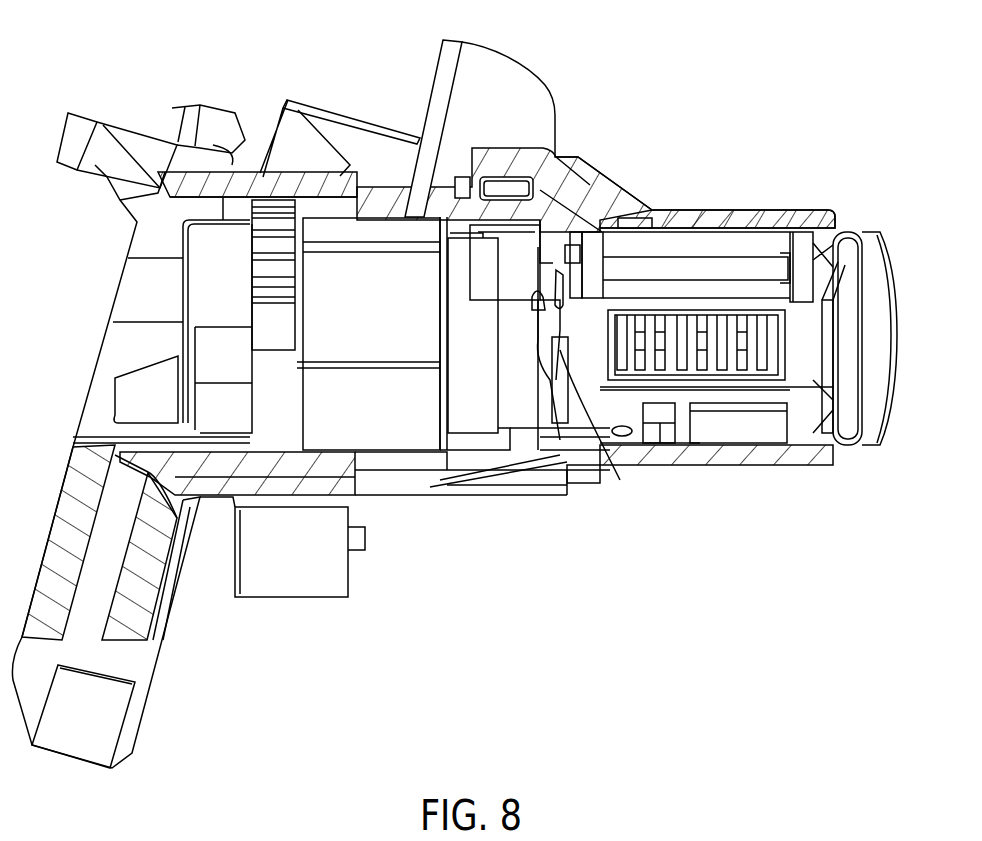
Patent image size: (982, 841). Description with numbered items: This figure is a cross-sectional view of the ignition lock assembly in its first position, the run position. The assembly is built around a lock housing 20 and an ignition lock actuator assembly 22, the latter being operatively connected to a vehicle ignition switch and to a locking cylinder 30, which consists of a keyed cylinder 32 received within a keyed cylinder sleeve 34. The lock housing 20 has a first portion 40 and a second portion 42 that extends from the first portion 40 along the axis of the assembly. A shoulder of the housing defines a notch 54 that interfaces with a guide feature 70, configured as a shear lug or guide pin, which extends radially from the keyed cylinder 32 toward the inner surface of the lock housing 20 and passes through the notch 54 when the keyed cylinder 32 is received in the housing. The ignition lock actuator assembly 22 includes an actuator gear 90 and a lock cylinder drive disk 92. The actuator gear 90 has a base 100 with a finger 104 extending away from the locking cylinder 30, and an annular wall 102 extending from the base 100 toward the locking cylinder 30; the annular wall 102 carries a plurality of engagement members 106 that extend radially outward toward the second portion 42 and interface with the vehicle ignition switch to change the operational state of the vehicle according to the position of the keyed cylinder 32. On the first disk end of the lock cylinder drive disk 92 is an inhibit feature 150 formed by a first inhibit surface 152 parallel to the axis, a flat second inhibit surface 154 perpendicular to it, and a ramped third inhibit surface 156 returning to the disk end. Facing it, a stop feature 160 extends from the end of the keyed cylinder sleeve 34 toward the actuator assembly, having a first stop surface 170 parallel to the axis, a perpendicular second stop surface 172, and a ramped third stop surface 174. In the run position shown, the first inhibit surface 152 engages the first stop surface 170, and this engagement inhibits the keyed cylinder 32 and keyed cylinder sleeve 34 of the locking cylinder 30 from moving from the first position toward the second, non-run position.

The lock housing 20 is at (572, 130).
The ignition lock actuator assembly 22 is at (475, 443).
The locking cylinder 30 is at (896, 245).
The keyed cylinder 32 is at (858, 250).
The keyed cylinder sleeve 34 is at (703, 395).
The first portion 40 is at (765, 212).
The second portion 42 is at (347, 180).
The notch 54 is at (672, 425).
The guide feature 70 is at (662, 448).
The actuator gear 90 is at (300, 433).
The lock cylinder drive disk 92 is at (517, 400).
The base 100 is at (248, 437).
The annular wall 102 is at (335, 222).
The finger 104 is at (125, 393).
The engagement members 106 is at (268, 200).
The inhibit feature 150 is at (528, 290).
The first inhibit surface 152 is at (537, 300).
The second inhibit surface 154 is at (537, 286).
The third inhibit surface 156 is at (560, 287).
The stop feature 160 is at (560, 350).
The first stop surface 170 is at (568, 312).
The second stop surface 172 is at (575, 320).
The third stop surface 174 is at (570, 332).